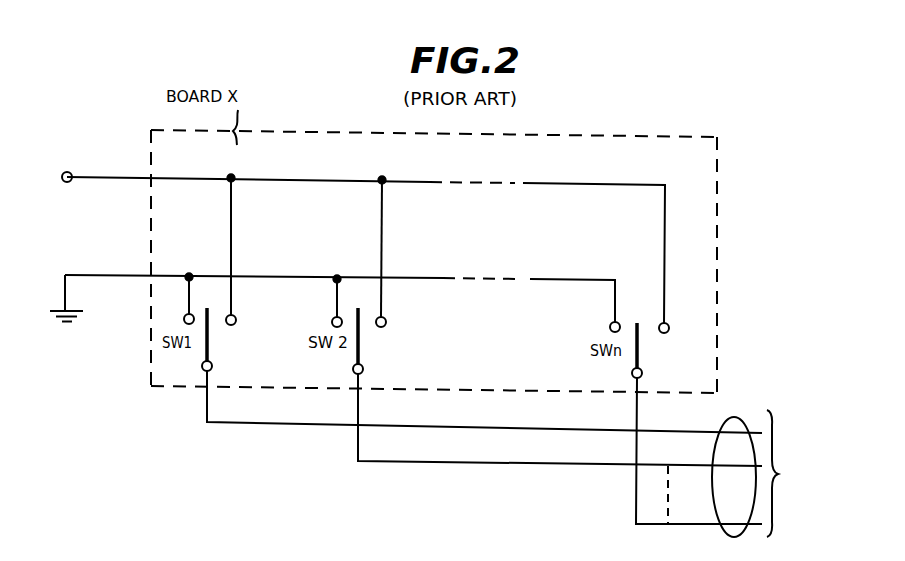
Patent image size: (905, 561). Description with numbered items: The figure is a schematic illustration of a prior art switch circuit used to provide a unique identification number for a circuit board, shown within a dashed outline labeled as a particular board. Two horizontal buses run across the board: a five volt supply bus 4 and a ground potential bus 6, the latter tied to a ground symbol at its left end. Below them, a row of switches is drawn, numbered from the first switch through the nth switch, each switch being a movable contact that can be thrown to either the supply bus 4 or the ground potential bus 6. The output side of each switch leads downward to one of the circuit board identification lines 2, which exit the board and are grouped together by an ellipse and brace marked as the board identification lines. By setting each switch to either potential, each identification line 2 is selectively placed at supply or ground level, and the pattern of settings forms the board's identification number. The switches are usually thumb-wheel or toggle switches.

The circuit board identification lines 2 is at (743, 417).
The 5 volt supply bus 4 is at (573, 185).
The ground potential bus 6 is at (566, 282).